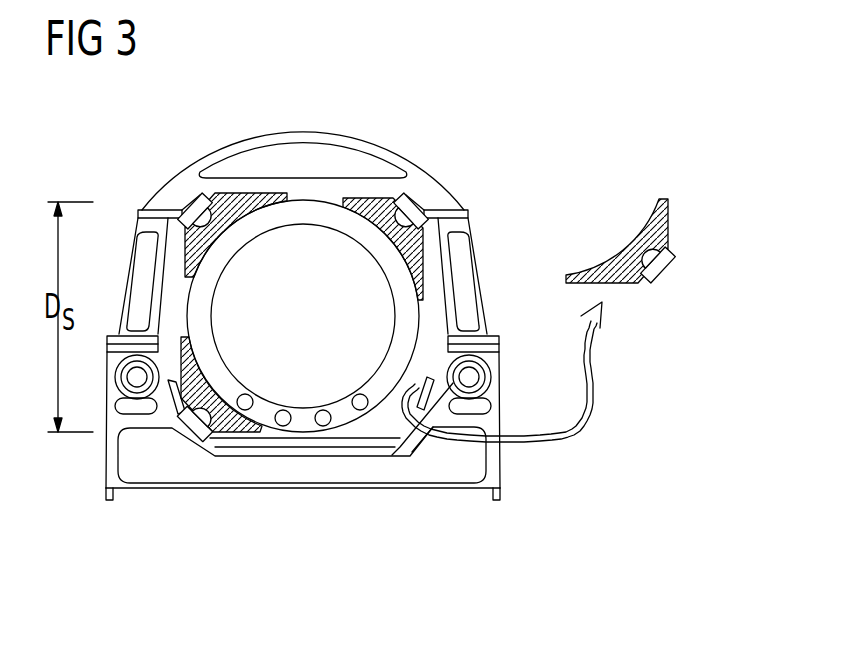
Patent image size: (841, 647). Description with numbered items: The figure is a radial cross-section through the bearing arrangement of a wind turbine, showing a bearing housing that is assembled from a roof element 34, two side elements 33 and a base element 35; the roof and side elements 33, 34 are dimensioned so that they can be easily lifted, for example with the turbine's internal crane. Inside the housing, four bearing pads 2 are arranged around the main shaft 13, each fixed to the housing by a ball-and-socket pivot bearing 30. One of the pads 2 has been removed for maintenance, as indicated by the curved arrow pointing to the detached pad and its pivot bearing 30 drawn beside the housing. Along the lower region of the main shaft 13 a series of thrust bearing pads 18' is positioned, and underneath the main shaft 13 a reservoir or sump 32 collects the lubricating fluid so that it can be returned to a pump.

The bearing pad 2 is at (232, 198).
The main shaft 13 is at (385, 384).
The thrust bearing pads 18' is at (302, 468).
The ball-and-socket pivot bearing 30 is at (191, 203).
The reservoir 32 is at (303, 440).
The side element 33 is at (150, 227).
The roof element 34 is at (296, 141).
The base element 35 is at (497, 476).